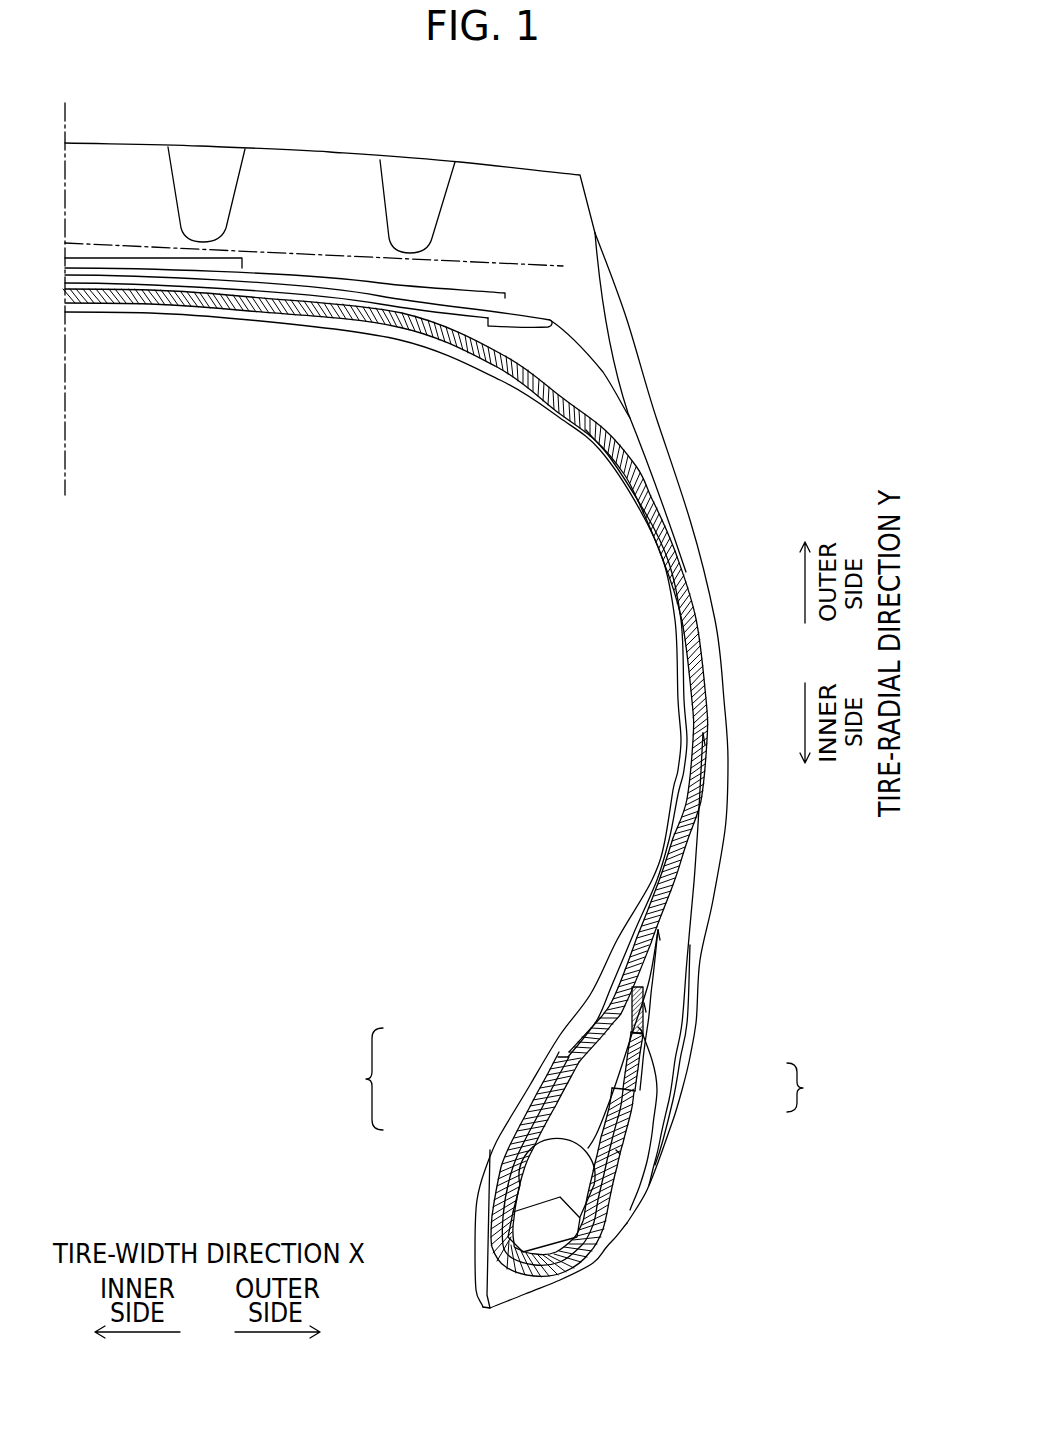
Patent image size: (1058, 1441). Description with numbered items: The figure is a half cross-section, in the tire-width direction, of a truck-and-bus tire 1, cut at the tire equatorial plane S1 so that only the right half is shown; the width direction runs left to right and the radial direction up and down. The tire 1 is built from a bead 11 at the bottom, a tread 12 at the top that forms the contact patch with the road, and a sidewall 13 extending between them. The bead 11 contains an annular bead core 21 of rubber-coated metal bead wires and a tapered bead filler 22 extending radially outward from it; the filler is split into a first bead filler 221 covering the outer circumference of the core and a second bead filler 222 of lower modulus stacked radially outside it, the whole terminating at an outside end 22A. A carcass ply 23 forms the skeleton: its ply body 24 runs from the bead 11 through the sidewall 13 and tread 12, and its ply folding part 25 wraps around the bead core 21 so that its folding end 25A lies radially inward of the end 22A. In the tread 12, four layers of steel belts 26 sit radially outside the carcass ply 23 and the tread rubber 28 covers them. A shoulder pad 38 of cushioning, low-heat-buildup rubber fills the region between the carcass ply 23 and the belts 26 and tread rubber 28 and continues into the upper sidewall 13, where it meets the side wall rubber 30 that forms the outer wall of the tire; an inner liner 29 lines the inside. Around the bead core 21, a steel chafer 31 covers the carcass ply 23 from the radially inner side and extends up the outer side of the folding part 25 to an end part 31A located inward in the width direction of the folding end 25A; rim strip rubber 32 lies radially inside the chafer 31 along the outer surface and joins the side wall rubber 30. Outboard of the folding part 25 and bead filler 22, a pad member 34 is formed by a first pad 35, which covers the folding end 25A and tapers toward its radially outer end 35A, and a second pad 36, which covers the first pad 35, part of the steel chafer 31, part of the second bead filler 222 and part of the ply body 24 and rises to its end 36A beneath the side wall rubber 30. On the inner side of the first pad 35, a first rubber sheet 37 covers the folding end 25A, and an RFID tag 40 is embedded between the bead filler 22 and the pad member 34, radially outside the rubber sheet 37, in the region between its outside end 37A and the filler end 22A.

The tire 1 is at (770, 110).
The bead 11 is at (762, 1141).
The tread 12 is at (466, 128).
The sidewall 13 is at (708, 478).
The bead core 21 is at (527, 1222).
The bead filler 22 is at (359, 1079).
The first bead filler 221 is at (533, 1172).
The second bead filler 222 is at (604, 1055).
The tire-radial direction outside end of bead filler 22A is at (657, 930).
The carcass ply 23 is at (595, 425).
The ply body 24 is at (613, 450).
The ply folding part 25 is at (603, 1197).
The folding end 25A is at (623, 1096).
The steel belts 26 is at (117, 262).
The tread rubber 28 is at (541, 197).
The inner liner 29 is at (687, 697).
The side wall rubber 30 is at (708, 830).
The steel chafer 31 is at (573, 1268).
The end part of steel chafer 31A is at (617, 1151).
The rim strip rubber 32 is at (497, 1290).
The pad member 34 is at (814, 1087).
The first pad 35 is at (625, 1152).
The outer end of first reinforcing rubber 35A is at (644, 1003).
The second pad 36 is at (637, 1077).
The outer end of second reinforcing rubber 36A is at (703, 733).
The first rubber sheet 37 is at (632, 1058).
The tire-radial direction outside end of first rubber sheet 37A is at (638, 1027).
The shoulder pad 38 is at (570, 377).
The RFID tag 40 is at (635, 1005).
The tire equatorial plane S1 is at (66, 450).